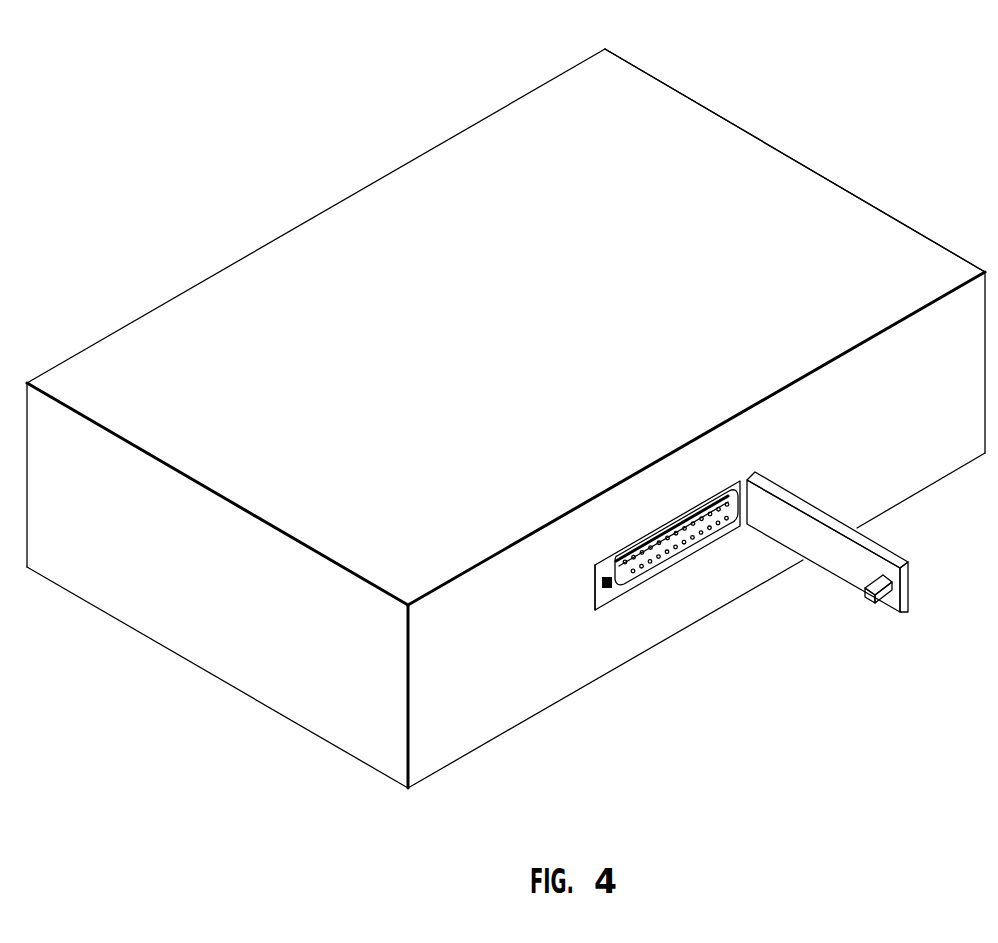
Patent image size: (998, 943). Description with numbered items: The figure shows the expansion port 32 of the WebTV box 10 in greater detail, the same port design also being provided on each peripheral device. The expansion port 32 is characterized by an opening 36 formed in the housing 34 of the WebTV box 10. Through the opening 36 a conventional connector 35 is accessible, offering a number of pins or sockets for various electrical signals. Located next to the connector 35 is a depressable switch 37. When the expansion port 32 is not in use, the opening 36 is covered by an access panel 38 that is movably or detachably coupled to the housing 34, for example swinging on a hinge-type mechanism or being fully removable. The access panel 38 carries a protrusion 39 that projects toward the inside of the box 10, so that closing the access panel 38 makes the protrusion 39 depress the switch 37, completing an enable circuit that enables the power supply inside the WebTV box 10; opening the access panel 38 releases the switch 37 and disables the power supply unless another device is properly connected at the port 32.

The WebTV box 10 is at (818, 90).
The expansion port 32 is at (667, 610).
The housing 34 is at (925, 237).
The connector 35 is at (692, 543).
The opening 36 is at (595, 585).
The depressable switch 37 is at (601, 589).
The access panel 38 is at (897, 548).
The protrusion 39 is at (864, 591).